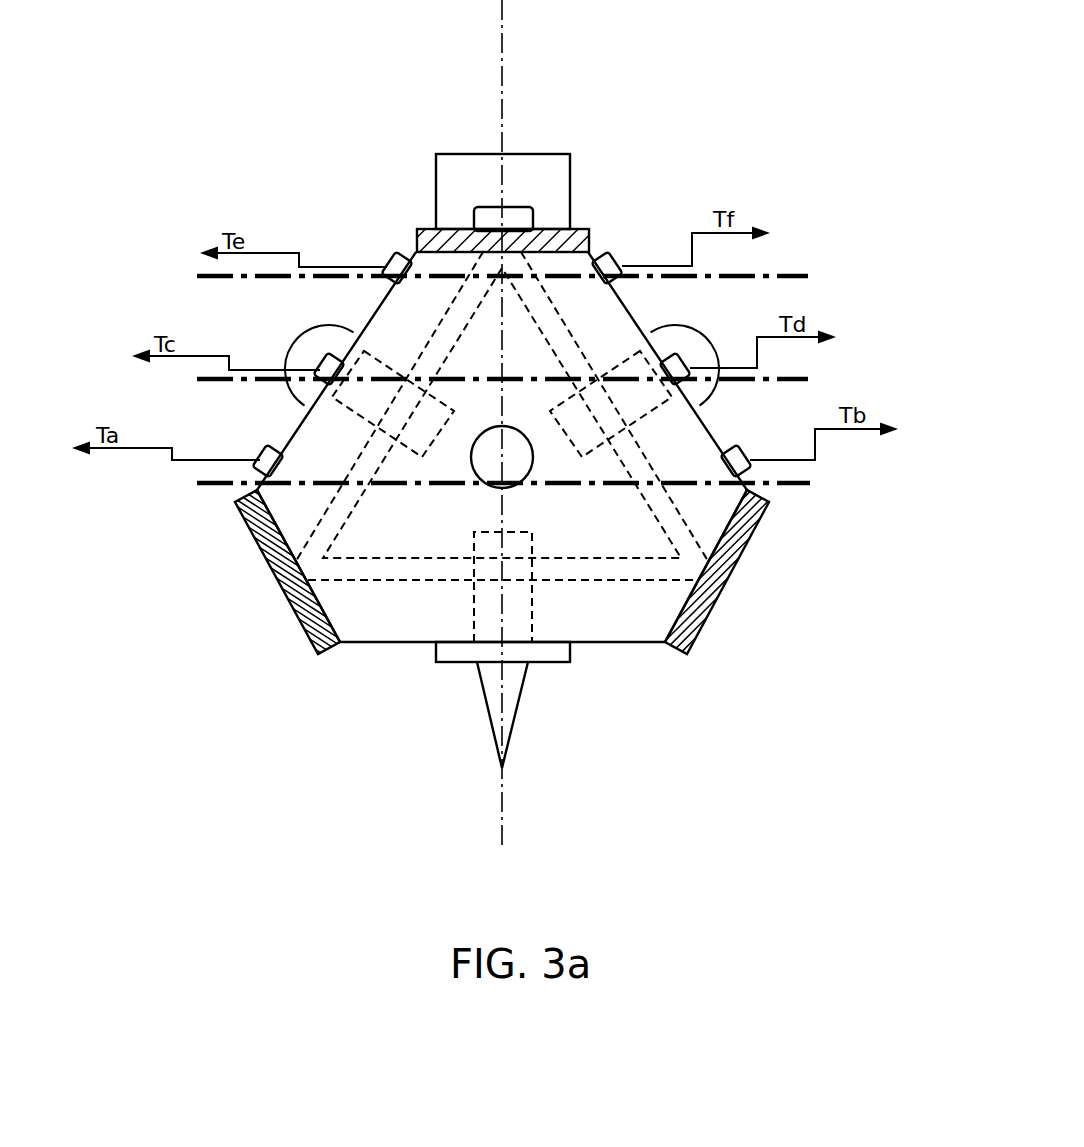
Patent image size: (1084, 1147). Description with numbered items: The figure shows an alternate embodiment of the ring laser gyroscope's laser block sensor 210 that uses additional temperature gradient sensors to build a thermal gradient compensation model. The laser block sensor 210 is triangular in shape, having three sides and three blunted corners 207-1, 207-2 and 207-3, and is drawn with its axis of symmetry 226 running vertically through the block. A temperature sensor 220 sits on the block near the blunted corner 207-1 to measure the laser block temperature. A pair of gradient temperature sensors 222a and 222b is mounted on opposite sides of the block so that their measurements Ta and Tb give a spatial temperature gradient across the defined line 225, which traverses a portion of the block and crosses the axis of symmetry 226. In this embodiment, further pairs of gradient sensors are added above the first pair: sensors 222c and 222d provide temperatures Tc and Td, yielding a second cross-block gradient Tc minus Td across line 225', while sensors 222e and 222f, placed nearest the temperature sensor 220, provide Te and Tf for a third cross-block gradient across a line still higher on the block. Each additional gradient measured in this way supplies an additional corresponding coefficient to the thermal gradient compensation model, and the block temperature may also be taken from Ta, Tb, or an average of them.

The laser block sensor 210 is at (463, 88).
The temperature sensor 220 is at (488, 207).
The blunted corner 207-1 is at (415, 238).
The blunted corner 207-2 is at (295, 610).
The blunted corner 207-3 is at (718, 600).
The gradient temperature sensor 222a is at (275, 450).
The gradient temperature sensor 222b is at (743, 452).
The additional temperature gradient sensor 222c is at (327, 363).
The additional temperature gradient sensor 222d is at (680, 360).
The additional temperature gradient sensor 222e is at (383, 258).
The additional temperature gradient sensor 222f is at (623, 263).
The defined line 225 is at (539, 522).
The line 225' is at (561, 343).
The axis of symmetry 226 is at (503, 818).